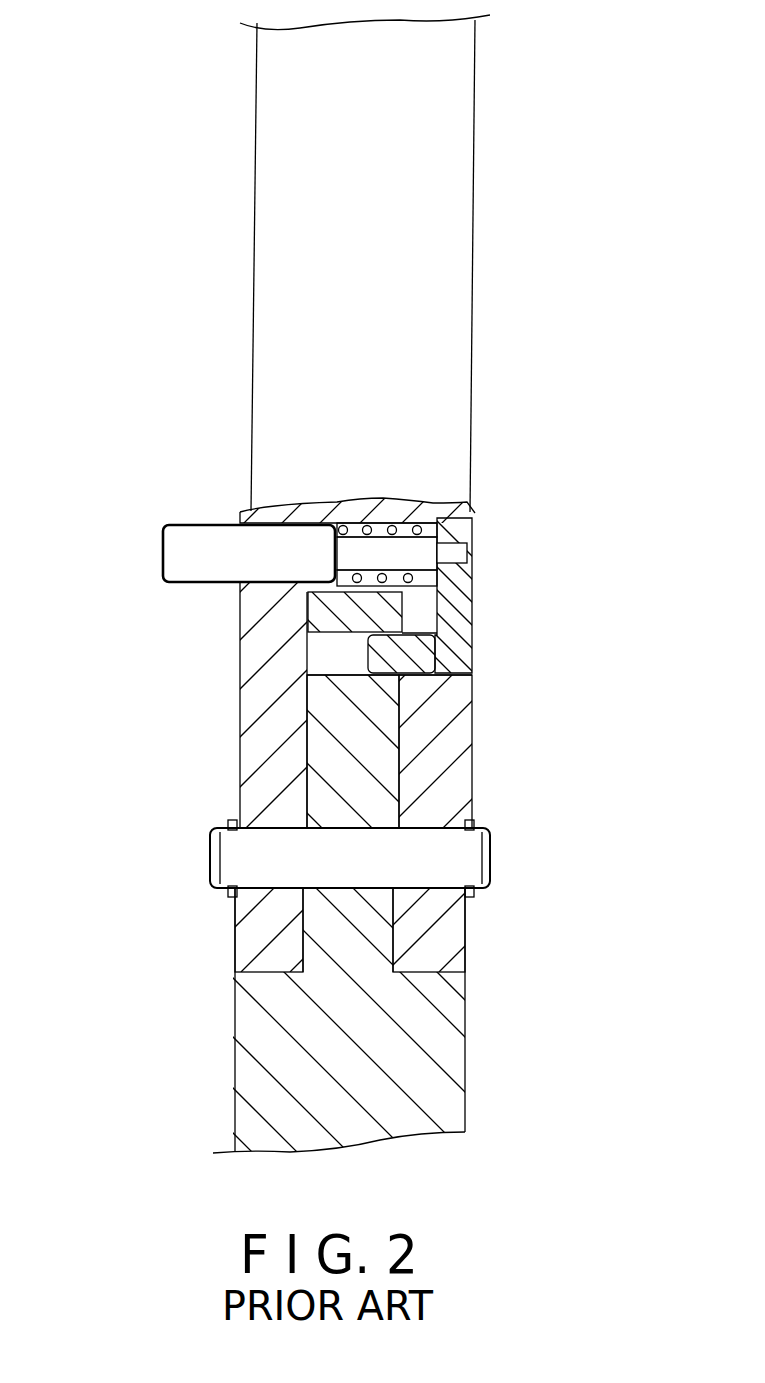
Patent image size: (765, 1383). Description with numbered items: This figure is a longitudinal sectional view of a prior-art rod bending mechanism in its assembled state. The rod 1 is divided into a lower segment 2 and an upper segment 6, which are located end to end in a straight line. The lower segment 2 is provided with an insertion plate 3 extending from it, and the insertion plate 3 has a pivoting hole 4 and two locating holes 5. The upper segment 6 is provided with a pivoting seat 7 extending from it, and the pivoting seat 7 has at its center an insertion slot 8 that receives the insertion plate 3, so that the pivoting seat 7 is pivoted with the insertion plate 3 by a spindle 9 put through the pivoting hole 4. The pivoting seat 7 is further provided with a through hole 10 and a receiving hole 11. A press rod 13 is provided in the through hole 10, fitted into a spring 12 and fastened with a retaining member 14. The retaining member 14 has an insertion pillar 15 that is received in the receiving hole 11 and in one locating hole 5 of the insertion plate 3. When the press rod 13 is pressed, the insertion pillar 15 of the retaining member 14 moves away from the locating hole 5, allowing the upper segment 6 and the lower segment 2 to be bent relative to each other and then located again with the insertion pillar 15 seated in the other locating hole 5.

The rod 1 is at (156, 156).
The lower segment 2 is at (395, 1062).
The insertion plate 3 is at (370, 795).
The pivoting hole 4 is at (320, 915).
The locating hole 5 is at (360, 675).
The upper segment 6 is at (457, 132).
The pivoting seat 7 is at (267, 827).
The insertion slot 8 is at (307, 717).
The spindle 9 is at (418, 862).
The through hole 10 is at (270, 600).
The receiving hole 11 is at (415, 625).
The spring 12 is at (418, 524).
The press rod 13 is at (195, 532).
The retaining member 14 is at (468, 632).
The insertion pillar 15 is at (380, 650).